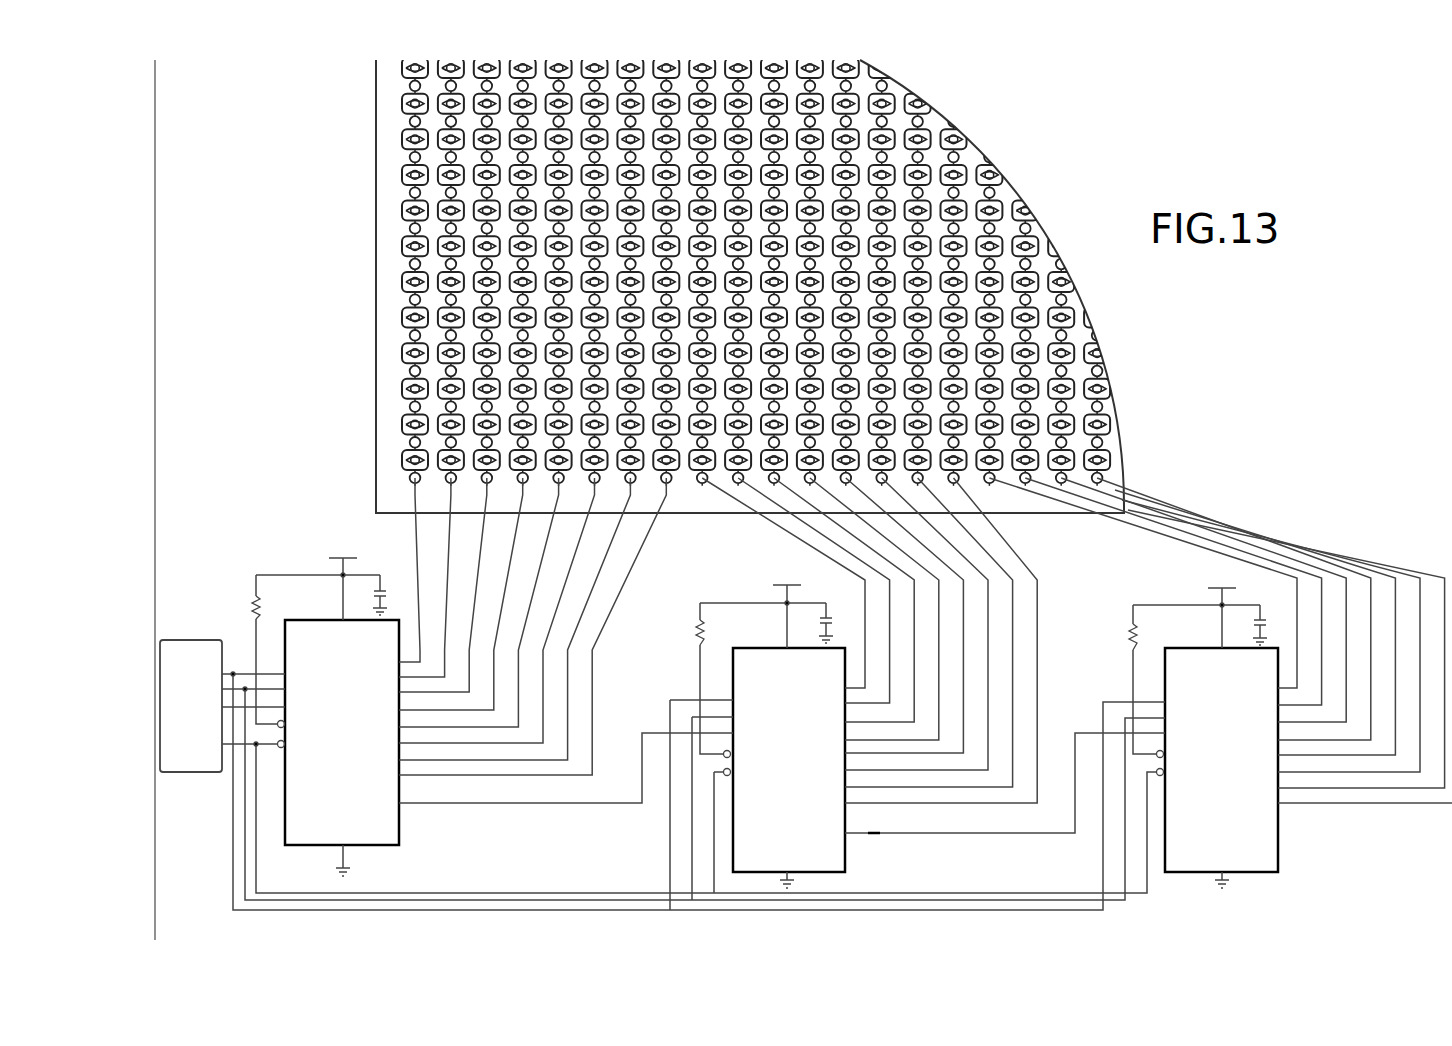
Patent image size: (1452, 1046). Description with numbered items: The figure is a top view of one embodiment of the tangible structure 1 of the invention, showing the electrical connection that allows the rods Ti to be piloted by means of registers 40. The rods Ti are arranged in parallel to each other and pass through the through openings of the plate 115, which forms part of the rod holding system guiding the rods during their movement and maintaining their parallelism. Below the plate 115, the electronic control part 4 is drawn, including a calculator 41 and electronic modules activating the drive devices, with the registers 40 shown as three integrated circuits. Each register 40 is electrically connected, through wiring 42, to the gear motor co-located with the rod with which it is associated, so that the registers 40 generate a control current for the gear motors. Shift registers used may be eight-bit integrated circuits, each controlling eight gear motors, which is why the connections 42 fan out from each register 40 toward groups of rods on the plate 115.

The tangible structure 1 is at (312, 250).
The plate 115 is at (385, 330).
The driver circuit 4 is at (226, 578).
The controller 41 is at (185, 683).
The registers 40 is at (300, 822).
The wiring lines 42 is at (795, 536).